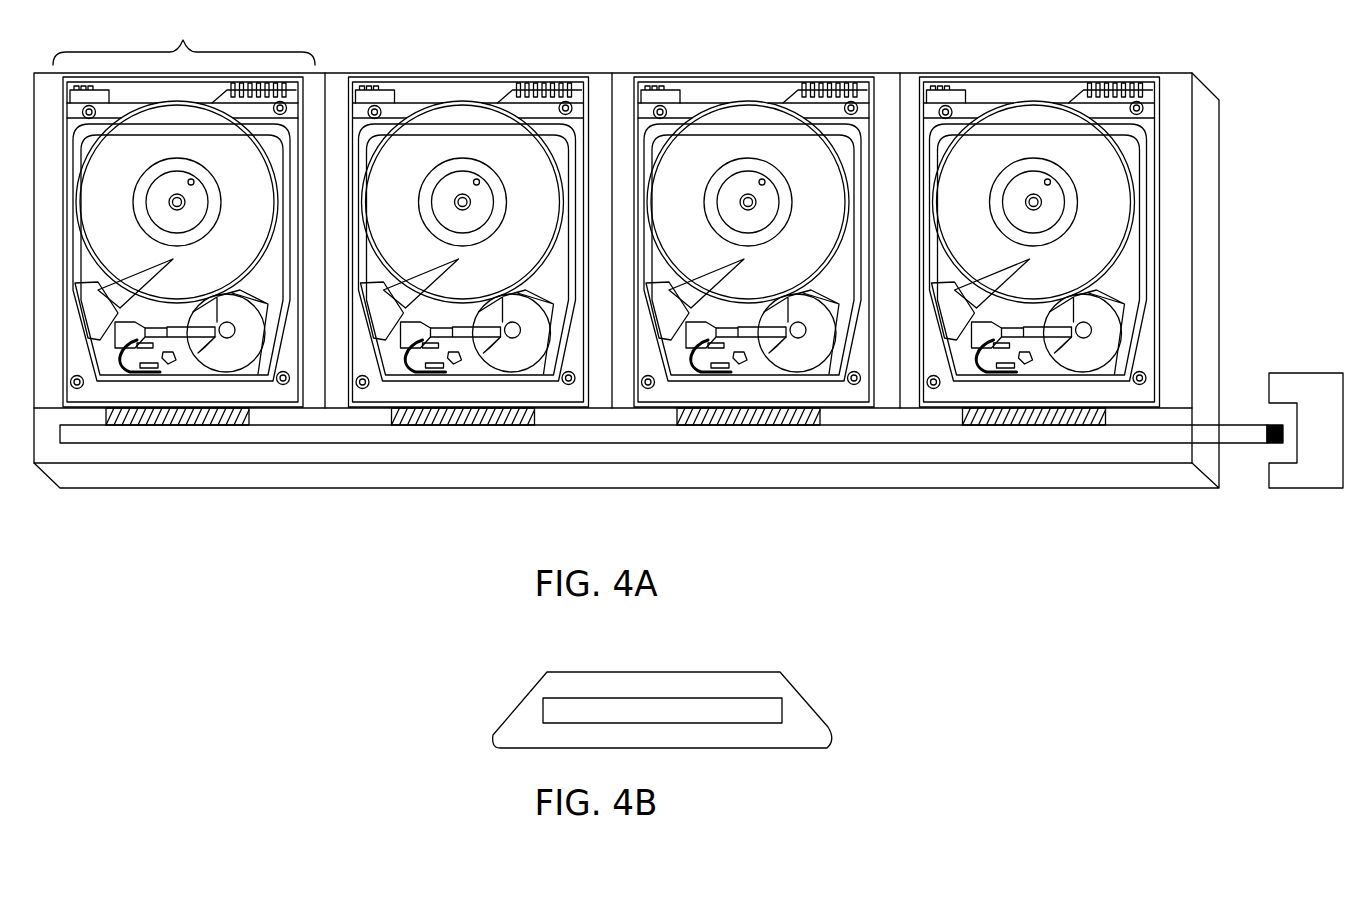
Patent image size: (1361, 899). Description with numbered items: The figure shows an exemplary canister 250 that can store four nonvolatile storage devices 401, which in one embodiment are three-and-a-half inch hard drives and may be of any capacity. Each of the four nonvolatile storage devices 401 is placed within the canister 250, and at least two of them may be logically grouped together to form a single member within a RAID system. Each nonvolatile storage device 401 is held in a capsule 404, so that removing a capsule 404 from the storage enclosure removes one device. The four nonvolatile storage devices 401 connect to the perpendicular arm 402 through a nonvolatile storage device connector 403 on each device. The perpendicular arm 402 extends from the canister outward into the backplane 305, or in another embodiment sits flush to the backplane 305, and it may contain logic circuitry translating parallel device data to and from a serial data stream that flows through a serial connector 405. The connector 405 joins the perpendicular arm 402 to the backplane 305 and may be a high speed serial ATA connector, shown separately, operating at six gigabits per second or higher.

In FIG. 4A, the canister 250 is at (1093, 557).
In FIG. 4A, the backplane 305 is at (1319, 387).
In FIG. 4A, the nonvolatile storage device 401 is at (77, 389).
In FIG. 4A, the perpendicular arm 402 is at (425, 443).
In FIG. 4A, the nonvolatile storage device connector 403 is at (218, 425).
In FIG. 4A, the capsule 404 is at (184, 273).
In FIG. 4A, the serial connector 405 is at (1267, 436).
In FIG. 4B, the serial connector 405 is at (757, 672).